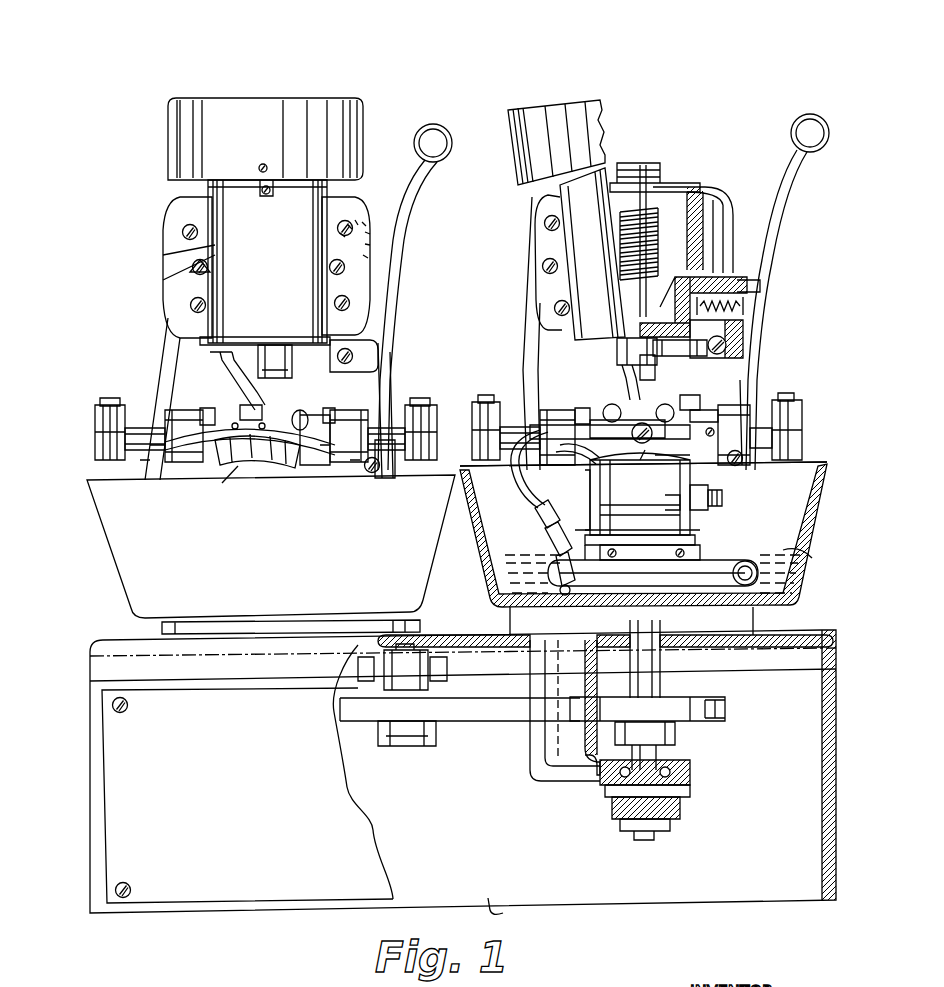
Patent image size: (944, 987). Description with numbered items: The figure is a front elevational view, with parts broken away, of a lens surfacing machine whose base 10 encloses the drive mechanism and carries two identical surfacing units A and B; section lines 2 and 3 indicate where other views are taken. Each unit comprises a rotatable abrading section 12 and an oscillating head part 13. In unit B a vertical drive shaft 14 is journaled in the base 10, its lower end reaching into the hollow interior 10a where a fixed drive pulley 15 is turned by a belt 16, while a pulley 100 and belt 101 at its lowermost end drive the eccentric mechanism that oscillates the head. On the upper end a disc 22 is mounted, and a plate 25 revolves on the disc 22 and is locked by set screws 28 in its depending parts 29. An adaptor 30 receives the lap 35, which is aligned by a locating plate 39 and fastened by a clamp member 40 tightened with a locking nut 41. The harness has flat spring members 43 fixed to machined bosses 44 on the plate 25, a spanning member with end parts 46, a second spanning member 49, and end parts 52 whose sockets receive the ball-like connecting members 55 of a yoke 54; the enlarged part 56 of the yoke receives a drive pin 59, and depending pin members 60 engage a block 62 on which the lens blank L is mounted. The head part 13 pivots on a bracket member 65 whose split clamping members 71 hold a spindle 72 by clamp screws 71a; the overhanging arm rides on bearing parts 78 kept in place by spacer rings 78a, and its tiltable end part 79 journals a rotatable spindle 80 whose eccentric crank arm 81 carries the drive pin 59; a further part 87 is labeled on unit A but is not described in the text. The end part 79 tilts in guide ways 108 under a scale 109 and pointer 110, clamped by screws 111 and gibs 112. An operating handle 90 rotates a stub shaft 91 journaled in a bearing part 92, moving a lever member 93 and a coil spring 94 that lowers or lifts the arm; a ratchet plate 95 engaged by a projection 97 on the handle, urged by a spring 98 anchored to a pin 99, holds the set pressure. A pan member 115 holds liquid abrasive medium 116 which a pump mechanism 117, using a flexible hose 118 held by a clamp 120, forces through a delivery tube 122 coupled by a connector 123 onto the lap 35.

The base 10 is at (168, 905).
The hollow interior 10a is at (511, 910).
The section line 2- 2 is at (634, 165).
The section line 3- 3 is at (82, 669).
The rotatable abrading section 12 is at (765, 484).
The oscillating head part 13 is at (384, 236).
The drive shaft 14 is at (652, 652).
The drive pulley 15 is at (712, 697).
The belt 16 is at (500, 718).
The disc 22 is at (560, 562).
The plate 25 is at (632, 546).
The set screws 28 is at (700, 547).
The depending parts 29 is at (668, 553).
The adaptor 30 is at (690, 505).
The lap 35 is at (690, 466).
The locating plate 39 is at (600, 493).
The clamp member 40 is at (712, 490).
The locking nut 41 is at (714, 500).
The first pair of flat spring members 43 is at (590, 535).
The machined bosses 44 is at (700, 531).
The end parts 46 is at (590, 505).
The second spanning member 49 is at (150, 472).
The attached end parts 52 is at (650, 462).
The yoke 54 is at (302, 423).
The ball-like connecting members 55 is at (165, 457).
The enlarged part 56 is at (610, 420).
The drive pin 59 is at (258, 415).
The depending pin members 60 is at (243, 467).
The block 62 is at (592, 458).
The bracket member 65 is at (400, 470).
The split clamping members 71 is at (108, 420).
The clamp screws 71a is at (112, 400).
The spindle 72 is at (135, 425).
The bearing parts 78 is at (173, 410).
The adjustable spacer rings 78a is at (205, 408).
The tiltable end part 79 is at (225, 238).
The rotatable spindle 80 is at (288, 362).
The adjustable eccentric crank arm 81 is at (628, 374).
The rail 87 is at (249, 343).
The operating handle 90 is at (393, 286).
The stub shaft 91 is at (700, 358).
The bearing part 92 is at (647, 374).
The lever member 93 is at (612, 320).
The coil spring 94 is at (655, 233).
The ratchet plate 95 is at (708, 276).
The ratchet projection 97 is at (730, 250).
The spring 98 is at (746, 317).
The pin 99 is at (750, 330).
The pulley 100 is at (690, 803).
The belt 101 is at (692, 790).
The guide ways 108 is at (185, 285).
The scale 109 is at (357, 230).
The pointer 110 is at (345, 255).
The screws 111 is at (337, 273).
The gibs 112 is at (195, 268).
The pan member 115 is at (427, 586).
The liquid abrasive medium 116 is at (800, 555).
The pump mechanism 117 is at (543, 545).
The flexible hose 118 is at (748, 566).
The clamp 120 is at (565, 568).
The delivery tube 122 is at (527, 482).
The connector 123 is at (545, 513).
The surfacing unit A is at (147, 215).
The surfacing unit B is at (728, 167).
The lens blank L is at (427, 486).